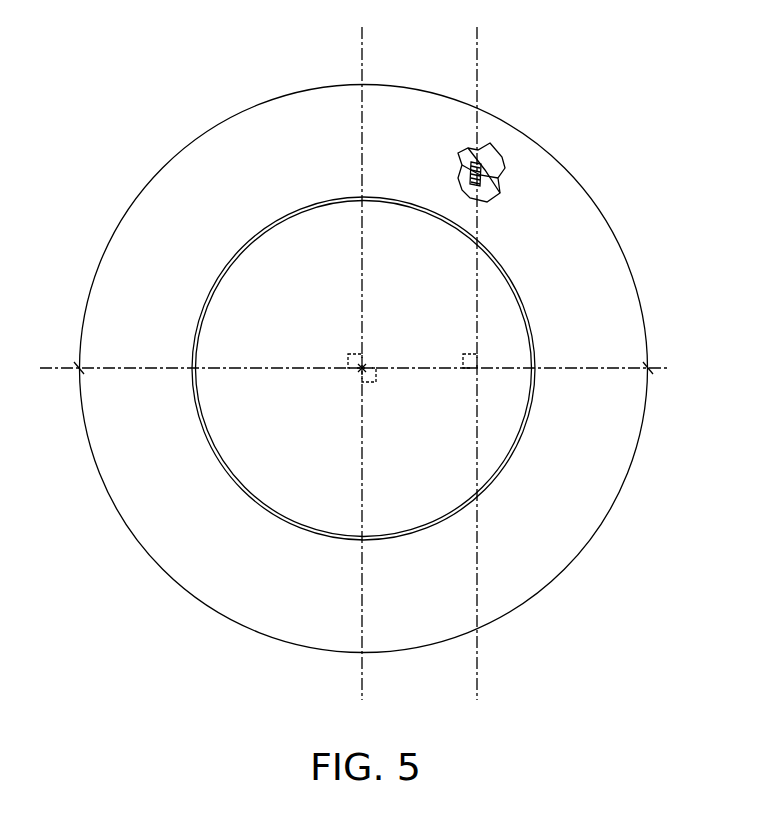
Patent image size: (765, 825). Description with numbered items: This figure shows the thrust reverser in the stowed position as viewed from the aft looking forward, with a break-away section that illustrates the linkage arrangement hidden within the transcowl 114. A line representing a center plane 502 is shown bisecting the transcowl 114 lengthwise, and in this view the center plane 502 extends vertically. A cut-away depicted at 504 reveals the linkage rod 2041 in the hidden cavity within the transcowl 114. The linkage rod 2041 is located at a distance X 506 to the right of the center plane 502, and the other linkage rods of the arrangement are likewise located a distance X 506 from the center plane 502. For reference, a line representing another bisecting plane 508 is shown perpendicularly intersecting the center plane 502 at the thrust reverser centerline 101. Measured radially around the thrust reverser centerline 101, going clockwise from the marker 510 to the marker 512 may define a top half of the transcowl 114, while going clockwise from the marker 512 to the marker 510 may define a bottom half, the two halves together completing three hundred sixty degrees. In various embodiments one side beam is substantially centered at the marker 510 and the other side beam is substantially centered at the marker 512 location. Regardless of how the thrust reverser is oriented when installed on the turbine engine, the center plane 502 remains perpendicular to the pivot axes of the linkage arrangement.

The transcowl 114 is at (592, 279).
The center plane 502 is at (362, 276).
The distance X 506 is at (477, 35).
The bisecting plane 508 is at (676, 371).
The marker 510 is at (79, 368).
The marker 512 is at (648, 368).
The thrust reverser centerline 101 is at (361, 370).
The cut-away 504 is at (505, 165).
The linkage rod 2041 is at (500, 190).